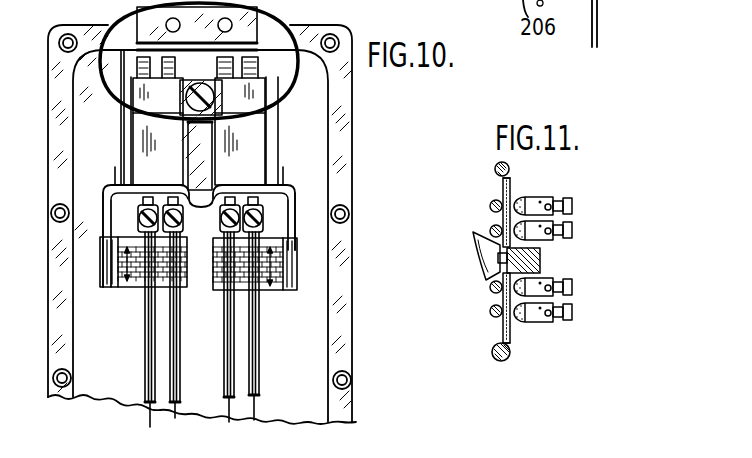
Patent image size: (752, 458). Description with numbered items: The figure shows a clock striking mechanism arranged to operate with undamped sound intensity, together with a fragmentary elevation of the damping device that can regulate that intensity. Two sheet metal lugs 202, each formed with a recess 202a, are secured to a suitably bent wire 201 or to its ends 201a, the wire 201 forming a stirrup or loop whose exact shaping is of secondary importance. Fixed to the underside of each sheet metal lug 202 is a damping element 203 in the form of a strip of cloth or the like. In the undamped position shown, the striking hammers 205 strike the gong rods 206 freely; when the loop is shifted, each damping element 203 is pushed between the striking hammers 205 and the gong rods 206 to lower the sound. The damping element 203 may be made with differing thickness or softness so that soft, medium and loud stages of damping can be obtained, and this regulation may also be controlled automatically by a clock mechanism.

In FIG. 10, the wire 201 is at (258, 191).
In FIG. 10, the ends of the wire 201a is at (108, 212).
In FIG. 11, the ends of the wire 201a is at (496, 170).
In FIG. 10, the sheet metal lug 202 is at (278, 288).
In FIG. 11, the sheet metal lug 202 is at (509, 173).
In FIG. 10, the recess 202a is at (126, 251).
In FIG. 11, the damping element 203 is at (503, 192).
In FIG. 10, the striking hammer 205 is at (171, 204).
In FIG. 11, the striking hammer 205 is at (553, 227).
In FIG. 10, the gong rod 206 is at (168, 362).
In FIG. 11, the gong rod 206 is at (491, 230).